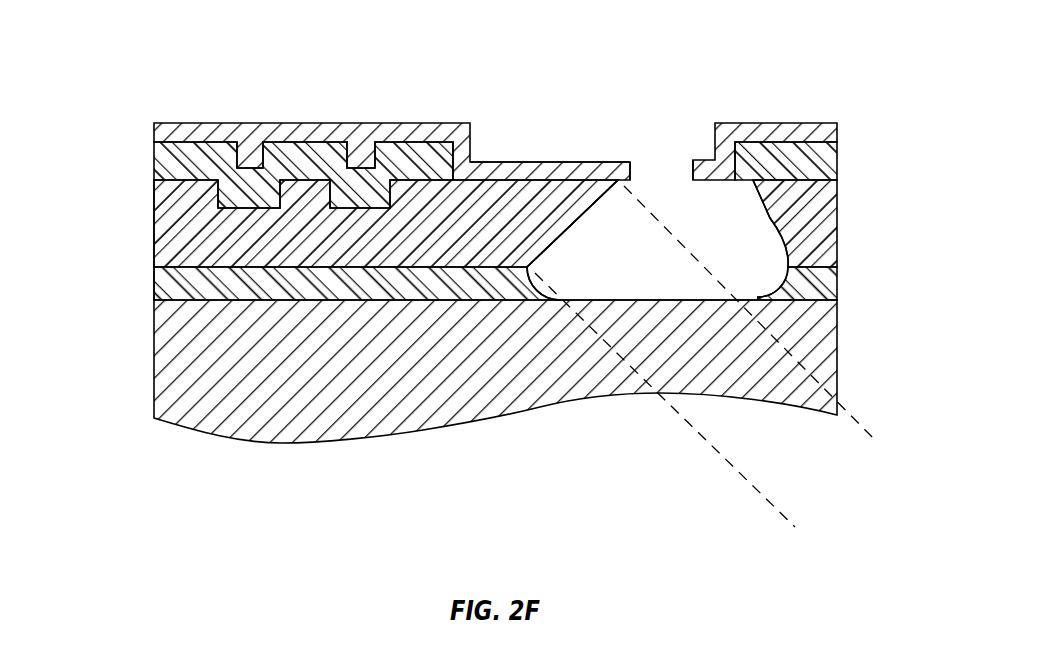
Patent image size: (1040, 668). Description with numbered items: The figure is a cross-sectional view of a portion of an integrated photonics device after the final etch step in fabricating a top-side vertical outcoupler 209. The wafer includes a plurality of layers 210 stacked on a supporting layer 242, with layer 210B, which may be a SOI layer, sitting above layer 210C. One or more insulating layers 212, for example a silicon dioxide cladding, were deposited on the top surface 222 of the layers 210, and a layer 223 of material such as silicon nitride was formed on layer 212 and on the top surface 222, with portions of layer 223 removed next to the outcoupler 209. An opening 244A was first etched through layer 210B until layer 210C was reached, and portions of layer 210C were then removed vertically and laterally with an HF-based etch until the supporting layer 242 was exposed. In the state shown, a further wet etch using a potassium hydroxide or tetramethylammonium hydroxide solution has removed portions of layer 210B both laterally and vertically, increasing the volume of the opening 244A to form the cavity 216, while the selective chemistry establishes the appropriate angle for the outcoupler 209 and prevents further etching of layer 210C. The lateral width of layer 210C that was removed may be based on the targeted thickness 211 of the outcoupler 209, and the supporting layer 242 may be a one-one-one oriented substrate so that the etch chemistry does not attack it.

The outcoupler 209 is at (535, 265).
The layers 210 is at (152, 178).
The layer 210B is at (488, 243).
The layer 210C is at (838, 285).
The thickness 211 is at (795, 527).
The insulating layer 212 is at (838, 160).
The cavity 216 is at (754, 253).
The top surface 222 is at (488, 159).
The layer 223 is at (614, 152).
The supporting layer 242 is at (482, 371).
The opening 244A is at (659, 192).